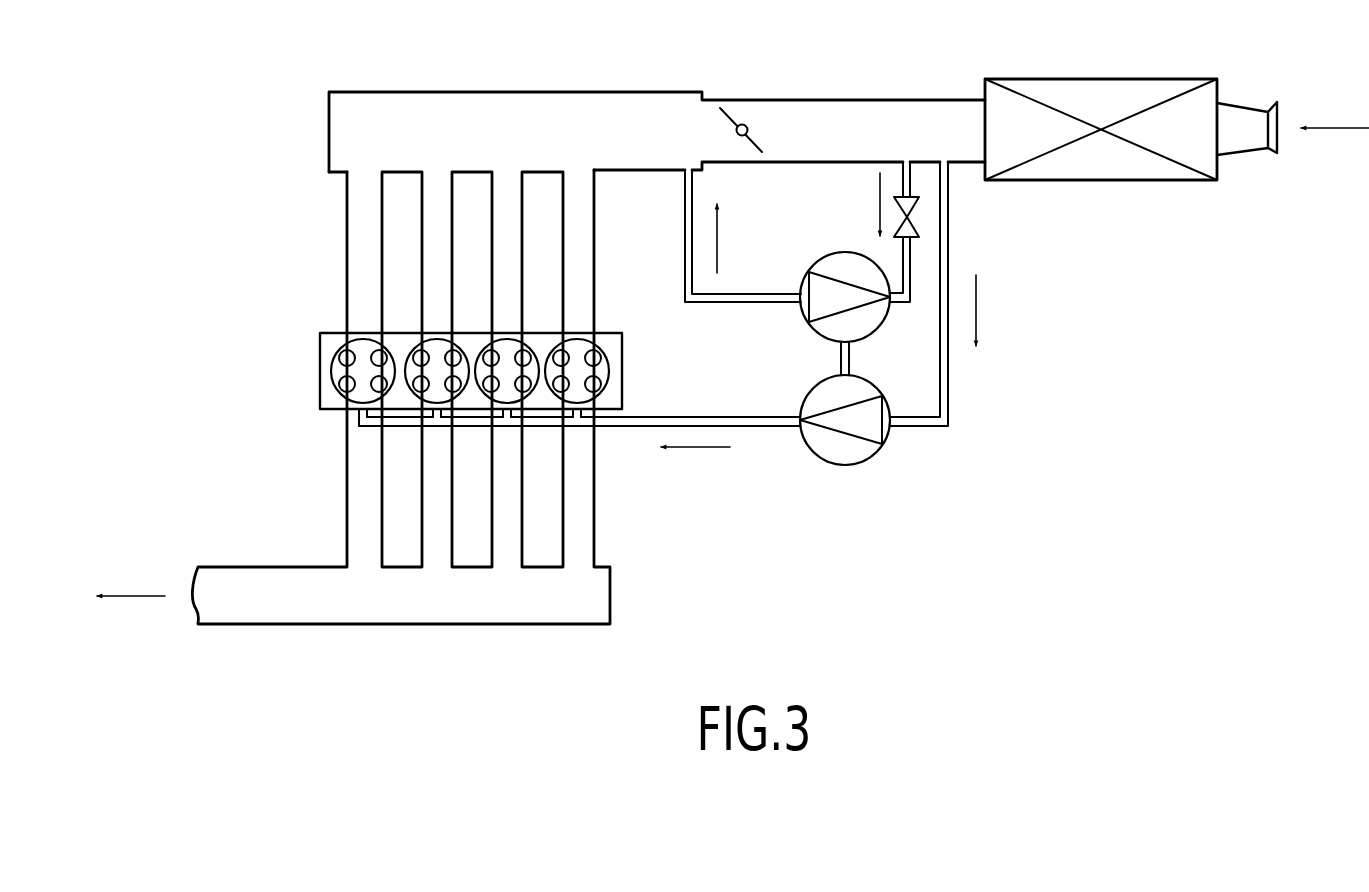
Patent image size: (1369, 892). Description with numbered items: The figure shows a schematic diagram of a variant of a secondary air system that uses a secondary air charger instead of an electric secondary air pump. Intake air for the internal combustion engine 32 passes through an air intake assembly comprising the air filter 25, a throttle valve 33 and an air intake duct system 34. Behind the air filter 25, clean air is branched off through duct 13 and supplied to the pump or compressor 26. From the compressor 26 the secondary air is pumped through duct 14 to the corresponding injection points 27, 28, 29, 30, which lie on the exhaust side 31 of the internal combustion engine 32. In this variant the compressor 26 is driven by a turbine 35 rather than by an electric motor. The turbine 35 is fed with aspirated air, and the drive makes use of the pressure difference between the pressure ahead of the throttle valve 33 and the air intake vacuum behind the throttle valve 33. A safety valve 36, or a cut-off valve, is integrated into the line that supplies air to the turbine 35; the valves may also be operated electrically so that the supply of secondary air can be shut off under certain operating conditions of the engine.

The duct 13 is at (947, 246).
The duct 14 is at (698, 417).
The air filter 25 is at (1148, 172).
The compressor 26 is at (853, 453).
The injection point 27 is at (363, 411).
The injection point 28 is at (437, 428).
The injection point 29 is at (505, 420).
The injection point 30 is at (577, 422).
The exhaust side 31 is at (614, 515).
The internal combustion engine 32 is at (320, 357).
The throttle valve 33 is at (757, 146).
The air intake duct system 34 is at (323, 183).
The turbine 35 is at (836, 334).
The safety valve 36 is at (920, 233).